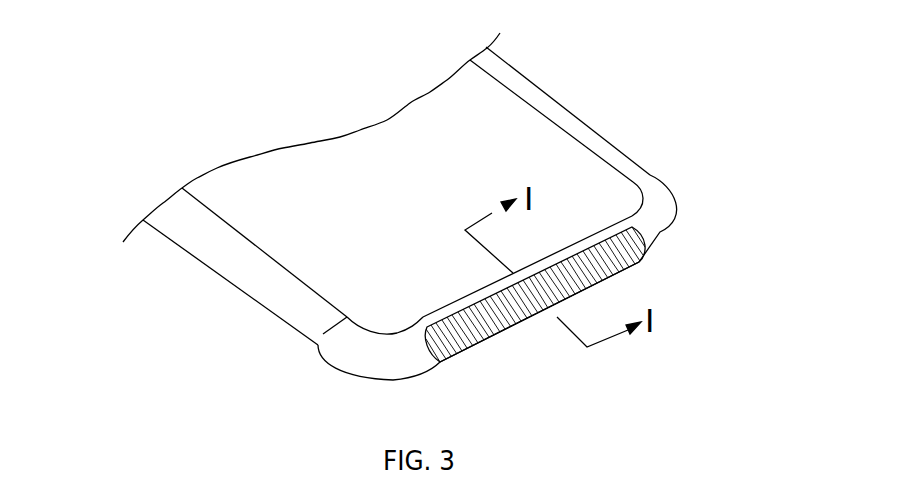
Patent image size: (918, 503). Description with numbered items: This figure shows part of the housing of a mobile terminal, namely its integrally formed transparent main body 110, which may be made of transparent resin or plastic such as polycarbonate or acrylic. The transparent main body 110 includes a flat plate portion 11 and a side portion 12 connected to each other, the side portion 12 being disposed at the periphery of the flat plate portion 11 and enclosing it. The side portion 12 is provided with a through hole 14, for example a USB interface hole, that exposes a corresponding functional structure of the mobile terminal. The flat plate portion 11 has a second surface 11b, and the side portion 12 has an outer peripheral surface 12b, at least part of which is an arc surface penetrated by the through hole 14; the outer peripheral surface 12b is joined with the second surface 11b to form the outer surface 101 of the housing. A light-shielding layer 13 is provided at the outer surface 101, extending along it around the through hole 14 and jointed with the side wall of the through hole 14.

The flat plate portion 11 is at (266, 202).
The side portion 12 is at (300, 313).
The transparent main body 110 is at (233, 372).
The light-shielding layer 13 is at (448, 363).
The through hole 14 is at (523, 314).
The second surface 11b is at (580, 180).
The outer peripheral surface 12b is at (650, 213).
The outer surface 101 is at (750, 168).